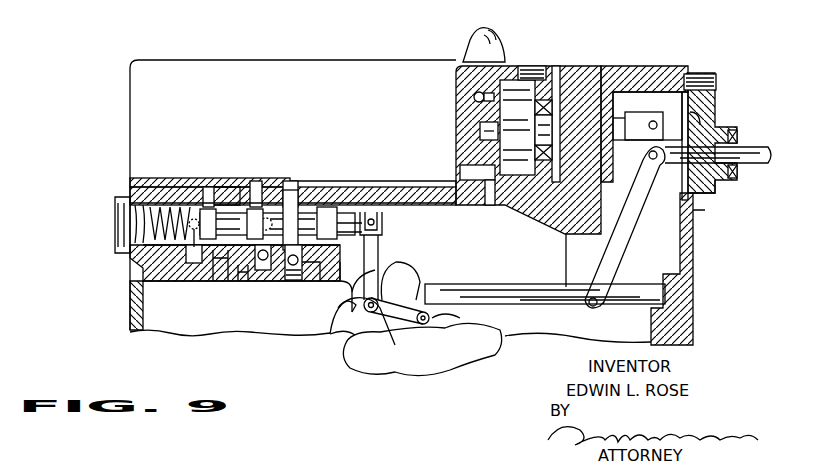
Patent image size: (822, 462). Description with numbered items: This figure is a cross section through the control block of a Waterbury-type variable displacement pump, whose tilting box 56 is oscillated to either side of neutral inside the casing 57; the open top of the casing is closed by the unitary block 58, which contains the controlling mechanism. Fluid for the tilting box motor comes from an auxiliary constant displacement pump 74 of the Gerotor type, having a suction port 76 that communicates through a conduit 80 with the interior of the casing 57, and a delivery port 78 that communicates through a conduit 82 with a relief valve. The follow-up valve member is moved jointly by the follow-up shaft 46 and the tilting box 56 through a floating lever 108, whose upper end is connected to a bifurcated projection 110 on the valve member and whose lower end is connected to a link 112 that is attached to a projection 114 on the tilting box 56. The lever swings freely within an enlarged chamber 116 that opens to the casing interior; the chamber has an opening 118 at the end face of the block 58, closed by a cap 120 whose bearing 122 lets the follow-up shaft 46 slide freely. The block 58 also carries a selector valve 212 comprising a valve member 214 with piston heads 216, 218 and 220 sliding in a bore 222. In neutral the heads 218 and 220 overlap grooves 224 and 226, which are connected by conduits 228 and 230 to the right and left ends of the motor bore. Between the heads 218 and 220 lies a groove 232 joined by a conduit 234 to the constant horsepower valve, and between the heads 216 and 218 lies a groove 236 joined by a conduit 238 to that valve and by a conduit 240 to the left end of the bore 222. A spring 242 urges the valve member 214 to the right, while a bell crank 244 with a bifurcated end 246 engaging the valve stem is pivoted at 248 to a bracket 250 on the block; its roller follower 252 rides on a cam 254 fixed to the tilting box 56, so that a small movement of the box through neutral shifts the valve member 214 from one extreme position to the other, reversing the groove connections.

The follow-up shaft 46 is at (750, 148).
The tilting box 56 is at (379, 321).
The casing 57 is at (133, 291).
The block 58 is at (293, 195).
The auxiliary constant displacement pump 74 is at (522, 78).
The suction port 76 is at (492, 206).
The delivery port 78 is at (495, 100).
The conduit 80 is at (474, 206).
The conduit 82 is at (473, 97).
The floating lever 108 is at (617, 243).
The bifurcated projection 110 is at (630, 120).
The link 112 is at (540, 302).
The projection 114 is at (328, 311).
The enlarged chamber 116 is at (592, 237).
The opening 118 is at (715, 112).
The cap 120 is at (718, 96).
The bearing 122 is at (714, 190).
The selector valve 212 is at (216, 265).
The valve member 214 is at (302, 252).
The piston head 216 is at (331, 211).
The piston head 218 is at (253, 211).
The piston head 220 is at (193, 211).
The bore 222 is at (272, 198).
The groove 224 is at (260, 262).
The groove 226 is at (198, 251).
The conduit 228 is at (273, 197).
The conduit 230 is at (145, 262).
The groove 232 is at (227, 197).
The conduit 234 is at (241, 272).
The groove 236 is at (317, 187).
The conduit 238 is at (291, 275).
The conduit 240 is at (147, 186).
The spring 242 is at (150, 216).
The bell crank 244 is at (380, 260).
The bifurcated end 246 is at (382, 219).
The pivot 248 is at (342, 338).
The bracket 250 is at (388, 281).
The roller follower 252 is at (432, 322).
The cam 254 is at (422, 349).